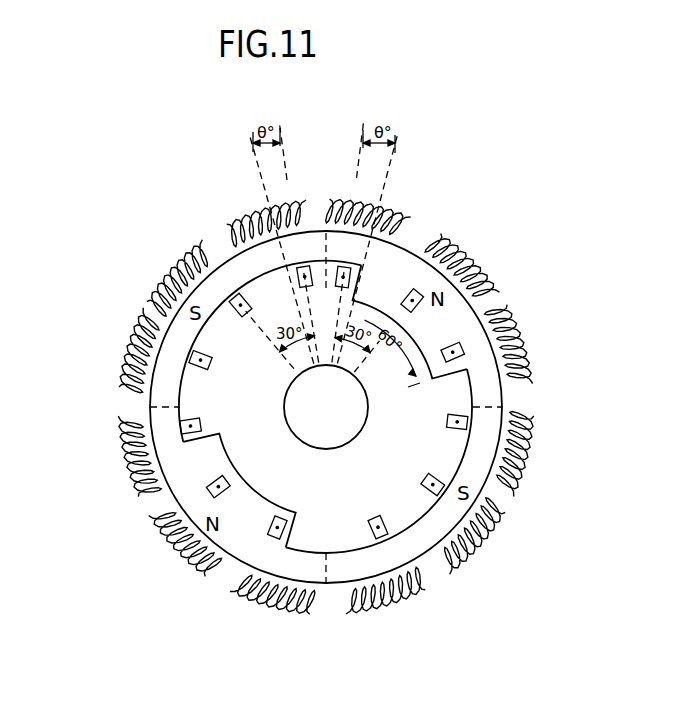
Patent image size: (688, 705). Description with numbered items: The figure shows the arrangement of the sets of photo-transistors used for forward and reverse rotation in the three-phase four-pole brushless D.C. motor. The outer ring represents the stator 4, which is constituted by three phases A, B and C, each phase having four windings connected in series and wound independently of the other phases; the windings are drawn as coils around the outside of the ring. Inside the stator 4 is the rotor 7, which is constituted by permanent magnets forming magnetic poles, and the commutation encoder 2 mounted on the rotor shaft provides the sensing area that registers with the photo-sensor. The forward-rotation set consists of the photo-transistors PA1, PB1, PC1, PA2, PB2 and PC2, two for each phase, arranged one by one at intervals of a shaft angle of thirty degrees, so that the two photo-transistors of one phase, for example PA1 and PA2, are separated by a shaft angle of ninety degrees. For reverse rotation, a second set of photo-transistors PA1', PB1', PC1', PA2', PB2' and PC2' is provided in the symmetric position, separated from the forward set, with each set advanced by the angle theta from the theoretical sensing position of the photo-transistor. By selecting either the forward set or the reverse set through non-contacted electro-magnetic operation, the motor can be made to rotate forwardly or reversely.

The commutation encoder 2 is at (386, 470).
The stator 4 is at (319, 659).
The rotor 7 is at (251, 533).
The photo-transistor PA1 is at (345, 224).
The photo-transistor PA1' is at (305, 217).
The photo-transistor PB1 is at (455, 251).
The photo-transistor PB1' is at (196, 256).
The photo-transistor PC1 is at (524, 333).
The photo-transistor PC1' is at (135, 331).
The photo-transistor PA2 is at (536, 434).
The photo-transistor PA2' is at (119, 442).
The photo-transistor PB2 is at (497, 523).
The photo-transistor PB2' is at (160, 526).
The photo-transistor PC2 is at (408, 588).
The photo-transistor PC2' is at (247, 592).